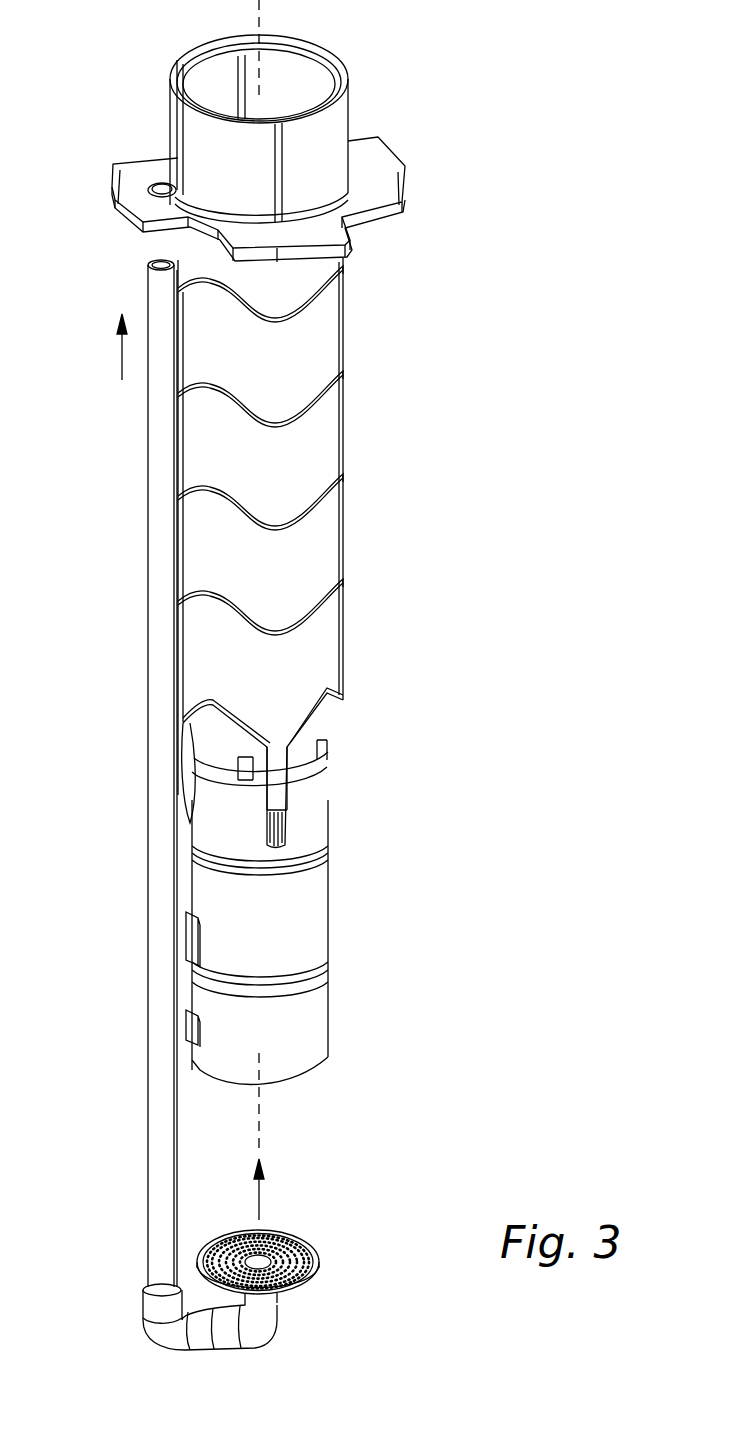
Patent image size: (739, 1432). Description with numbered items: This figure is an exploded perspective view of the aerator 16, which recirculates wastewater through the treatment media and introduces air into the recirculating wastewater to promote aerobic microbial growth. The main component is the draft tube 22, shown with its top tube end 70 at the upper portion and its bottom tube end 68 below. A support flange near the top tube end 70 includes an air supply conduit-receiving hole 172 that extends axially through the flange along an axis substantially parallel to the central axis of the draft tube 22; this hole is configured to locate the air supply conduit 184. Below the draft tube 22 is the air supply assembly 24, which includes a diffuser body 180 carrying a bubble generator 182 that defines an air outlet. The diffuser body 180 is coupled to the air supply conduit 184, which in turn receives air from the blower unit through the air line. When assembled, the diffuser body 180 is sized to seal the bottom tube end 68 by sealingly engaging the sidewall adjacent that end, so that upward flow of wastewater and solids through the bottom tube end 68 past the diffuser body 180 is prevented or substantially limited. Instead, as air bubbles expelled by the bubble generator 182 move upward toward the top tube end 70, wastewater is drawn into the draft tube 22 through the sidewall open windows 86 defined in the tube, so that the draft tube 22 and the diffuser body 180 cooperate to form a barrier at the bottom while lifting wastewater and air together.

The aerator 16 is at (500, 74).
The top tube end 70 is at (362, 40).
The air supply conduit-receiving hole 172 is at (157, 182).
The draft tube 22 is at (343, 343).
The sidewall open windows 86 is at (224, 782).
The bottom tube end 68 is at (370, 1057).
The air supply conduit 184 is at (142, 994).
The air supply assembly 24 is at (128, 1170).
The diffuser body 180 is at (315, 1280).
The bubble generator 182 is at (280, 1240).